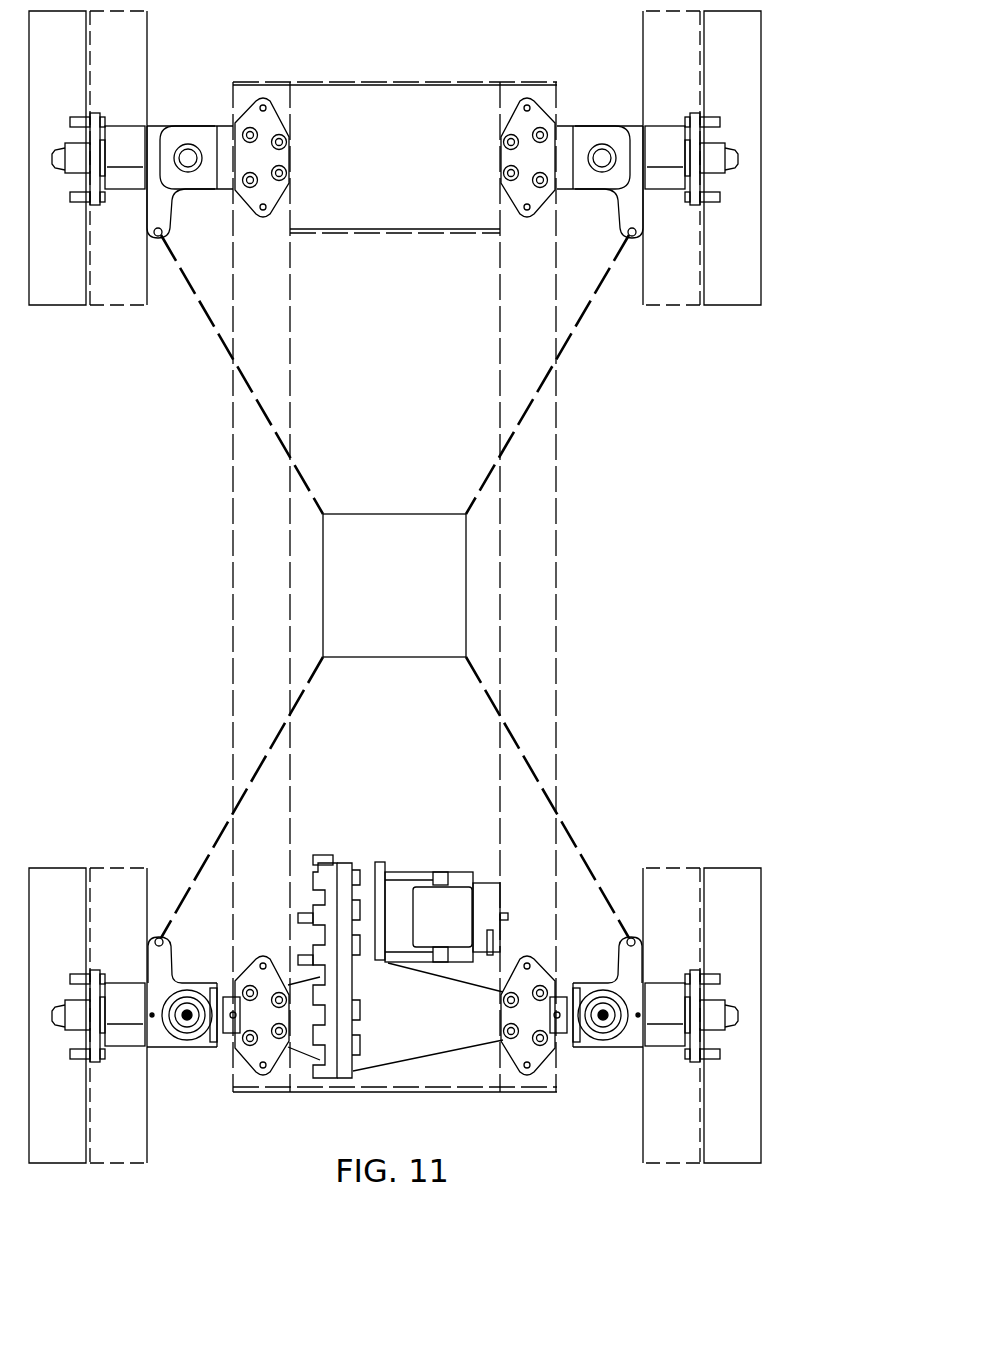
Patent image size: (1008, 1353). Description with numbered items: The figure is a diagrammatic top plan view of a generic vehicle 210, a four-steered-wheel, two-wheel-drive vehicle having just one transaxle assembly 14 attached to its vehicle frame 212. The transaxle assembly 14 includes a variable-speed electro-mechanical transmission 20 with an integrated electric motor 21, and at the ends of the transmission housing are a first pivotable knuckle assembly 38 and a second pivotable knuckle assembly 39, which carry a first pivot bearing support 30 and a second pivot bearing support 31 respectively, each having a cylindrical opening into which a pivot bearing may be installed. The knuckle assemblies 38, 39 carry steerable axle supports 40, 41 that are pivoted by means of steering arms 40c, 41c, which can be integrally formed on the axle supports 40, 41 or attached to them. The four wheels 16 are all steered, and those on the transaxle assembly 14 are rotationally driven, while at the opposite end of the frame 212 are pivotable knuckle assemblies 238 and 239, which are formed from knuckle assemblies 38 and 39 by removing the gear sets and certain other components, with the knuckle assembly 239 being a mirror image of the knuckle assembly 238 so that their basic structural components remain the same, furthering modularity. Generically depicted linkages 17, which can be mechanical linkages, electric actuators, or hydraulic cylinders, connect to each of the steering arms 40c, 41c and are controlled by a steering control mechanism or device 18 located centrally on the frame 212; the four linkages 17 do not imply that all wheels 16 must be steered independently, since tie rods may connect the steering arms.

The generic vehicle 210 is at (794, 60).
The vehicle frame 212 is at (556, 588).
The transaxle assembly 14 is at (400, 812).
The wheels 16 is at (87, 305).
The linkages 17 is at (203, 315).
The steering control mechanism or device 18 is at (381, 598).
The transmission 20 is at (381, 1022).
The electric motor 21 is at (429, 927).
The first pivot bearing support 30 is at (510, 120).
The second pivot bearing support 31 is at (280, 120).
The first pivotable knuckle assembly 38 is at (205, 1075).
The second pivotable knuckle assembly 39 is at (587, 1075).
The steerable axle support 40 is at (395, 587).
The steerable axle support 41 is at (395, 587).
The steering arm 40c is at (616, 210).
The steering arm 41c is at (174, 210).
The pivotable knuckle assembly 238 is at (578, 95).
The pivotable knuckle assembly 239 is at (213, 95).